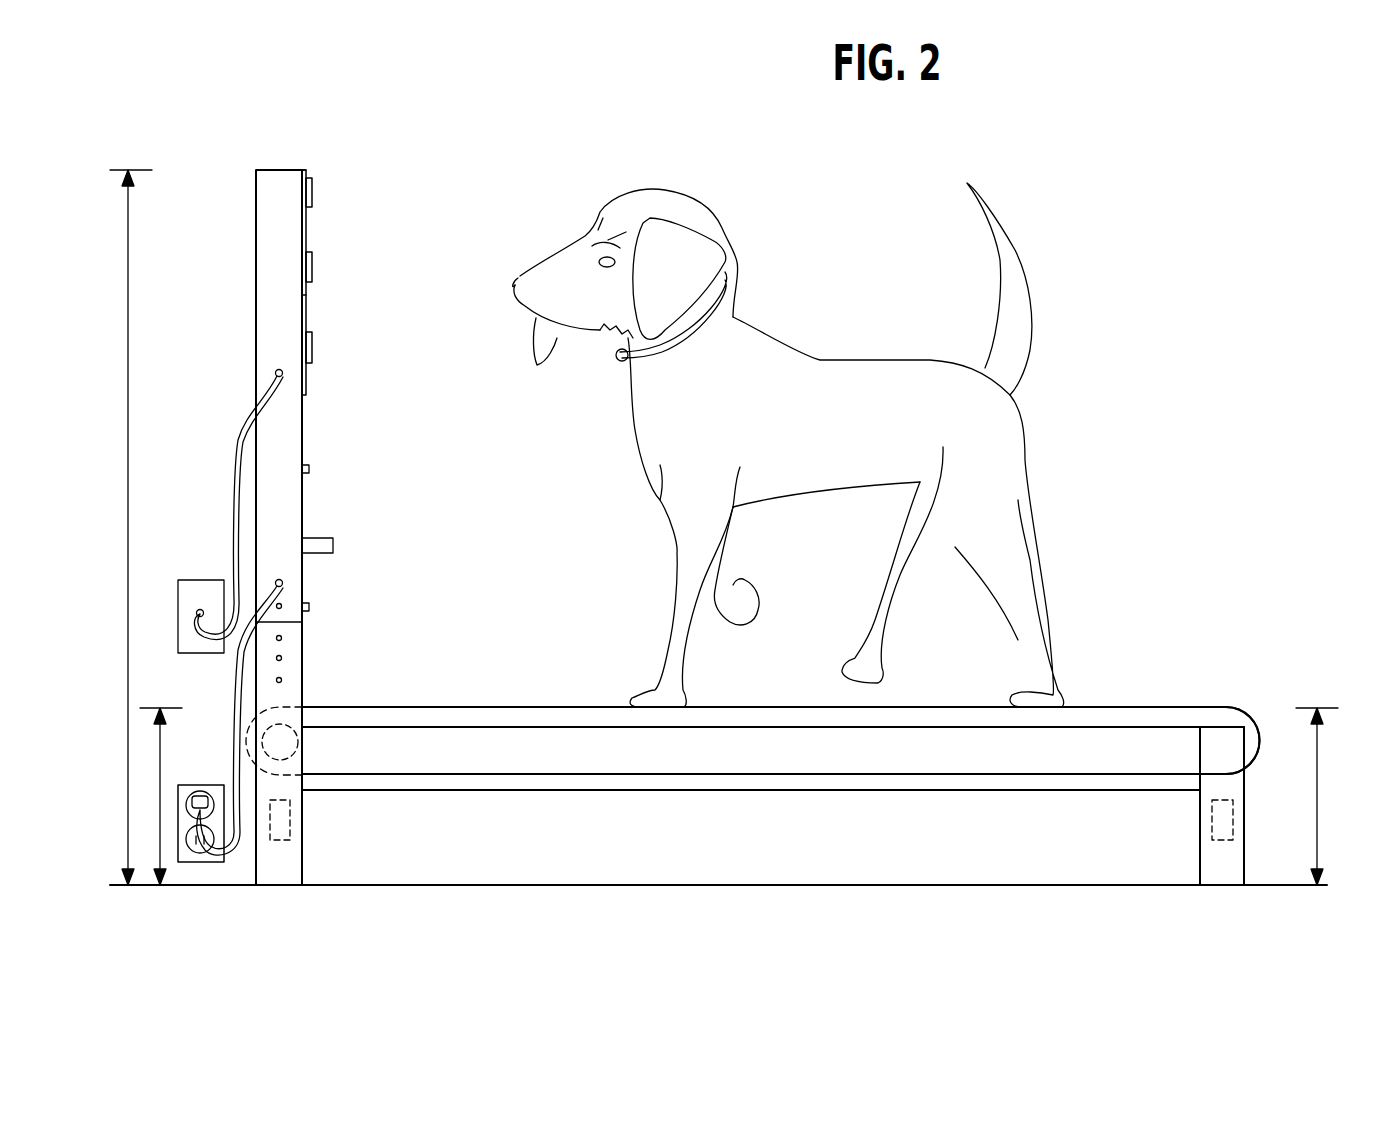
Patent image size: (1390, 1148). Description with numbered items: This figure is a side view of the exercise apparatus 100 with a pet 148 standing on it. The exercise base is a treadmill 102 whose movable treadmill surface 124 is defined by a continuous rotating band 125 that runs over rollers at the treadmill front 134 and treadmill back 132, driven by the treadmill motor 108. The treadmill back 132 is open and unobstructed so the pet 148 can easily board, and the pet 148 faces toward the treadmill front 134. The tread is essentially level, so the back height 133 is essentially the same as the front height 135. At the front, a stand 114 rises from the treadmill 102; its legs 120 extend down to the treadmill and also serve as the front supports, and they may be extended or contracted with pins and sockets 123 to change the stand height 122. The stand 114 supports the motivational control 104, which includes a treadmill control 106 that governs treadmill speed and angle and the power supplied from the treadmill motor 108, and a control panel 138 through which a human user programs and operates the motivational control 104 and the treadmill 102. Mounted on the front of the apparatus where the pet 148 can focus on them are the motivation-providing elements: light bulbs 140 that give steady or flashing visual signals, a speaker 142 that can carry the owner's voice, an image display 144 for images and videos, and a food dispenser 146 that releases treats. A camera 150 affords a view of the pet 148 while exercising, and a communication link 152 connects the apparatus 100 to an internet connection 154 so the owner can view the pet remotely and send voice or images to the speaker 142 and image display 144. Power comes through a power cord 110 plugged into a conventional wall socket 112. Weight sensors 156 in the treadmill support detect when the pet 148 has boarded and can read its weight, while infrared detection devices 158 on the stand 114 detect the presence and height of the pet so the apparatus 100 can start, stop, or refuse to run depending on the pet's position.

The exercise apparatus 100 is at (1172, 222).
The treadmill 102 is at (830, 707).
The motivational control 104 is at (277, 172).
The treadmill control 106 is at (268, 208).
The treadmill motor 108 is at (287, 750).
The power cord 110 is at (235, 690).
The wall socket 112 is at (207, 858).
The stand 114 is at (265, 485).
The legs 120 is at (302, 630).
The stand height 122 is at (128, 507).
The pins and sockets 123 is at (281, 604).
The treadmill surface 124 is at (1113, 697).
The continuous rotating band 125 is at (550, 697).
The treadmill back 132 is at (1258, 735).
The back height 133 is at (1318, 838).
The treadmill front 134 is at (255, 720).
The front height 135 is at (160, 795).
The control panel 138 is at (305, 172).
The light bulbs 140 is at (312, 265).
The speaker 142 is at (312, 355).
The image display 144 is at (306, 310).
The food dispenser 146 is at (333, 545).
The pet 148 is at (846, 348).
The camera 150 is at (313, 185).
The communication link 152 is at (238, 435).
The internet connection 154 is at (196, 580).
The weight sensors 156 is at (285, 833).
The infrared detection devices 158 is at (309, 470).